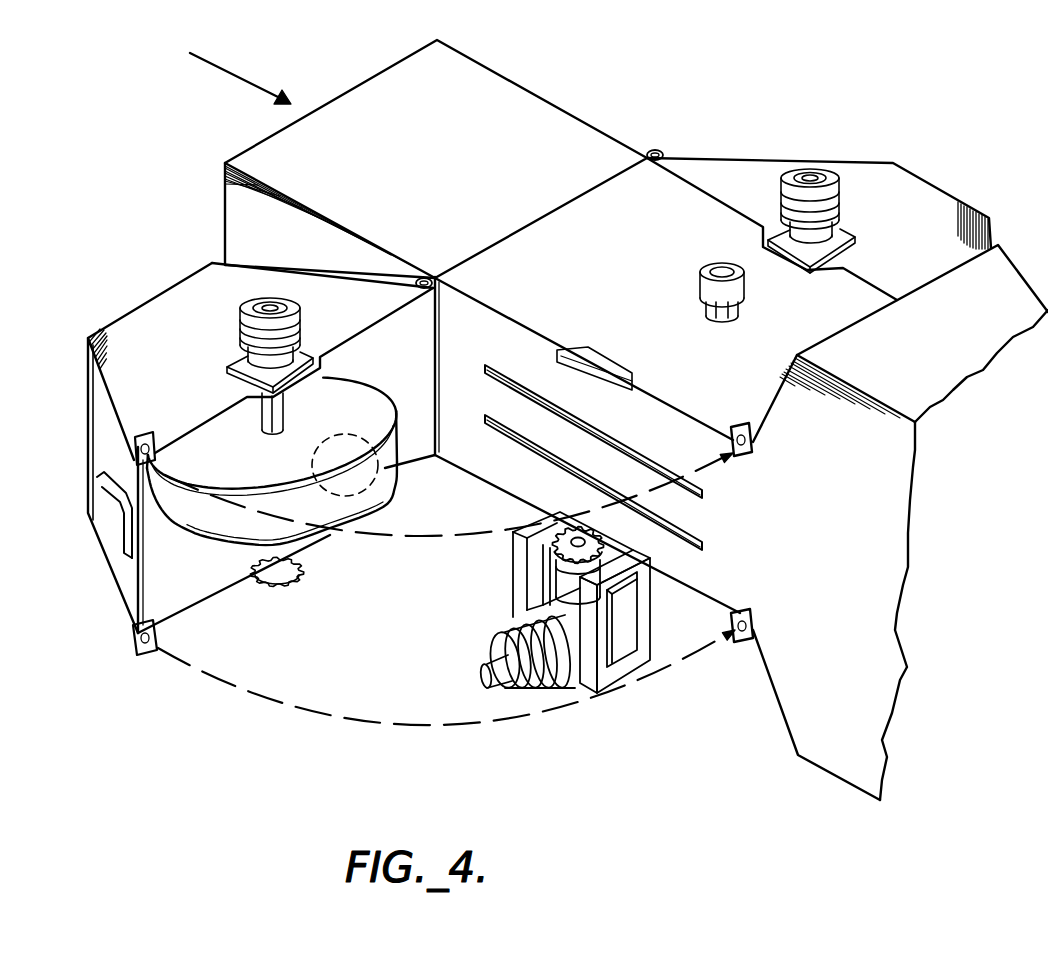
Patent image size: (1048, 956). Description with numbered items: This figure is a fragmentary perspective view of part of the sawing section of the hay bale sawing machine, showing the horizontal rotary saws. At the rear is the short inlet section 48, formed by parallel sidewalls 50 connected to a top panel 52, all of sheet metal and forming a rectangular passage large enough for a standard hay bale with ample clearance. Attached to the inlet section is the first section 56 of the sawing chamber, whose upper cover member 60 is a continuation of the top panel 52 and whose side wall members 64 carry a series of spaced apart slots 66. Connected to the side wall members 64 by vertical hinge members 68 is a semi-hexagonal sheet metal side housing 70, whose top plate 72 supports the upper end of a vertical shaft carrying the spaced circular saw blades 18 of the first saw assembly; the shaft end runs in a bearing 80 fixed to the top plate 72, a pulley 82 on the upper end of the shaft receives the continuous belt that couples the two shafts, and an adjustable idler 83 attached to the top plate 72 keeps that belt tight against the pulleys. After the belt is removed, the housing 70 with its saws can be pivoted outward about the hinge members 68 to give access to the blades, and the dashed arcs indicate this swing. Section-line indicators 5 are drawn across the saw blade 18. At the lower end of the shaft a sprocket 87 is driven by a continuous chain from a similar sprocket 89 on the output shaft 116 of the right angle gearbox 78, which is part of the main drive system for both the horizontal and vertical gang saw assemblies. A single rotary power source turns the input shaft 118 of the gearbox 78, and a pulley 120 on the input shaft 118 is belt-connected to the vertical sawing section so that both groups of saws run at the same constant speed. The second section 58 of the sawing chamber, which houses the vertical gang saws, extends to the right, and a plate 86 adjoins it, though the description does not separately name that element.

The inlet section 48 is at (541, 93).
The top panel 52 is at (450, 152).
The sidewalls 50 is at (284, 242).
The upper cover member 60 is at (616, 270).
The side wall members 64 is at (484, 347).
The slots 66 is at (600, 480).
The vertical hinge members 68 is at (664, 150).
The side housings 70 is at (160, 290).
The top plate 72 is at (162, 370).
The bearings 80 is at (240, 382).
The pulleys 82 is at (296, 307).
The adjustable idler 83 is at (748, 290).
The support plate 86 is at (969, 330).
The second section 58 is at (770, 766).
The circular saw blades 18 is at (236, 462).
The section line 5- 5 is at (315, 468).
The sprocket 87 is at (266, 587).
The first section 56 is at (270, 719).
The right angle gearbox 78 is at (527, 600).
The sprocket 89 is at (553, 550).
The output shaft 116 is at (560, 582).
The pulley 120 is at (490, 645).
The input shaft 118 is at (480, 680).